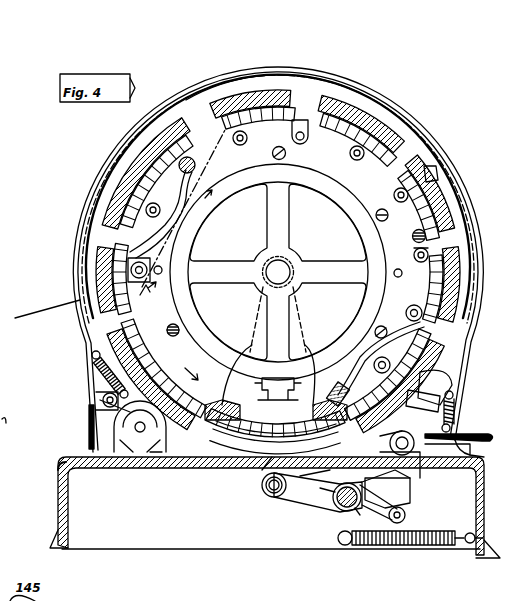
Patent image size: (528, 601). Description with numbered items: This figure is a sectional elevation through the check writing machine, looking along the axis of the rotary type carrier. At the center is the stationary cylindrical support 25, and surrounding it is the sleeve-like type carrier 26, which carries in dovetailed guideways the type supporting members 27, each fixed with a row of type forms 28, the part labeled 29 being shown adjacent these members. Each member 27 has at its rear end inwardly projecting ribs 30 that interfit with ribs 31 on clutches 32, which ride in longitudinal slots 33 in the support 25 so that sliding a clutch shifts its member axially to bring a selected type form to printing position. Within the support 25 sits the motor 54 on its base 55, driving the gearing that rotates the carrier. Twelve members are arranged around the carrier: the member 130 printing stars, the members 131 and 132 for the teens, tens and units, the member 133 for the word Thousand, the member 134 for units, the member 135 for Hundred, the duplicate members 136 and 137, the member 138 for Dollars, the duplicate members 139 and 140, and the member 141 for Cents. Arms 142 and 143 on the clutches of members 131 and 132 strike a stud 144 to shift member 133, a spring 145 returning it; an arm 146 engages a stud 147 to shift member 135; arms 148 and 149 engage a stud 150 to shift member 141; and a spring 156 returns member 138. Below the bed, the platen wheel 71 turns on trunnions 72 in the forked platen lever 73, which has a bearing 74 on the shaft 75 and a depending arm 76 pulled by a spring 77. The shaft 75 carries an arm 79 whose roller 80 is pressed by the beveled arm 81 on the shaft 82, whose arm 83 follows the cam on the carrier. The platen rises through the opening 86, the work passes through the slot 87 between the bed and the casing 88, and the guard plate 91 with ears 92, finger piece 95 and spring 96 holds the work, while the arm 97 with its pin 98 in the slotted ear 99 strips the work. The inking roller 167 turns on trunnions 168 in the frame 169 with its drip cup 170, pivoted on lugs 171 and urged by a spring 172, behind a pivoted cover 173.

The stationary cylindrical support 25 is at (450, 290).
The type carrier 26 is at (468, 212).
The type supporting member 27 is at (462, 238).
The type form 28 is at (432, 172).
The band 29 is at (455, 192).
The rib 30 is at (440, 252).
The rib 31 is at (407, 277).
The clutch 32 is at (420, 162).
The slot 33 is at (458, 316).
The motor 54 is at (215, 305).
The motor base 55 is at (250, 400).
The platen wheel 71 is at (268, 480).
The trunnion 72 is at (272, 491).
The platen lever 73 is at (295, 505).
The bearing 74 is at (334, 495).
The shaft 75 is at (343, 505).
The arm 76 is at (352, 512).
The spring 77 is at (366, 522).
The arm 79 is at (386, 537).
The roller 80 is at (404, 517).
The arm 81 is at (410, 500).
The shaft 82 is at (416, 447).
The arm 83 is at (448, 384).
The opening 86 is at (262, 472).
The slot 87 is at (82, 455).
The casing 88 is at (40, 314).
The guard plate 91 is at (210, 462).
The ear 92 is at (474, 458).
The finger piece 95 is at (478, 434).
The spring 96 is at (458, 413).
The arm 97 is at (396, 476).
The pin 98 is at (322, 488).
The ear 99 is at (300, 500).
The type supporting member 130 is at (108, 335).
The type supporting member 131 is at (125, 270).
The type supporting member 132 is at (105, 195).
The type supporting member 133 is at (145, 140).
The type supporting member 134 is at (232, 100).
The type supporting member 135 is at (302, 92).
The type supporting member 136 is at (372, 117).
The type supporting member 137 is at (440, 186).
The type supporting member 138 is at (450, 263).
The type supporting member 139 is at (462, 332).
The type supporting member 140 is at (440, 398).
The type supporting member 141 is at (421, 478).
The arm 142 is at (172, 222).
The arm 143 is at (158, 208).
The stud 144 is at (200, 166).
The spring 145 is at (195, 173).
The arm 146 is at (269, 150).
The stud 147 is at (308, 134).
The arm 148 is at (408, 312).
The arm 149 is at (372, 368).
The stud 150 is at (325, 392).
The spring 156 is at (417, 230).
The inking roller 167 is at (158, 454).
The trunnion 168 is at (140, 433).
The frame 169 is at (110, 420).
The drip cup 170 is at (130, 440).
The lug 171 is at (103, 400).
The spring 172 is at (98, 372).
The cover 173 is at (90, 420).